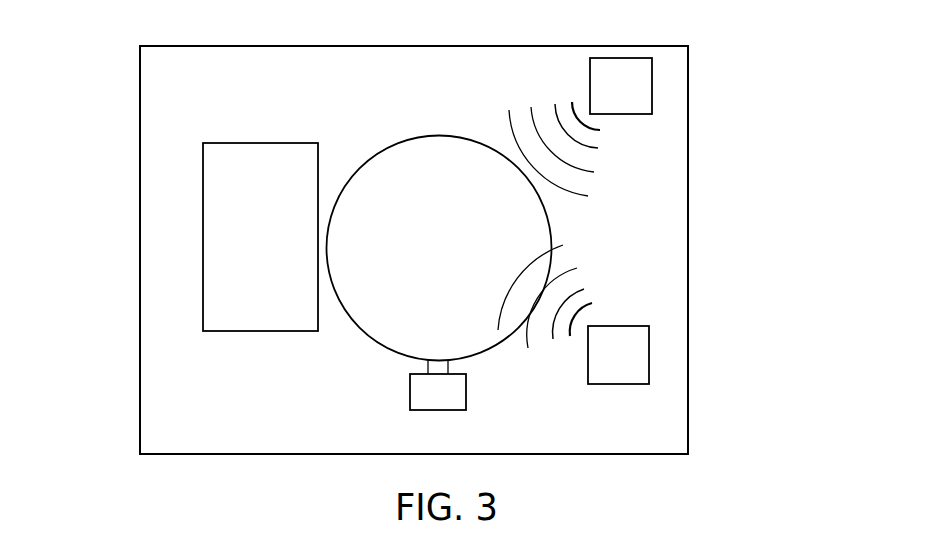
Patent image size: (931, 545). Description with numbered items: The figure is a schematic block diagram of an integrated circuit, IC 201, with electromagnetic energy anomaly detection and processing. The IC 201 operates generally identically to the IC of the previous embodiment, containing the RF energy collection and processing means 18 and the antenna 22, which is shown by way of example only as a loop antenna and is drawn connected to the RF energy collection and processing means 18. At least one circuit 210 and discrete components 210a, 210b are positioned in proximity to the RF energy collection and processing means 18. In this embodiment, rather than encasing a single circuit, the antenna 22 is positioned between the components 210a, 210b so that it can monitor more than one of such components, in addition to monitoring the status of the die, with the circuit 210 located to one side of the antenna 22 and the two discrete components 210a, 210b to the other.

The integrated circuit 201 is at (276, 466).
The circuit 210 is at (175, 237).
The antenna 22 is at (439, 184).
The RF energy collection and processing means 18 is at (426, 418).
The discrete component 210a is at (658, 127).
The discrete component 210b is at (658, 314).